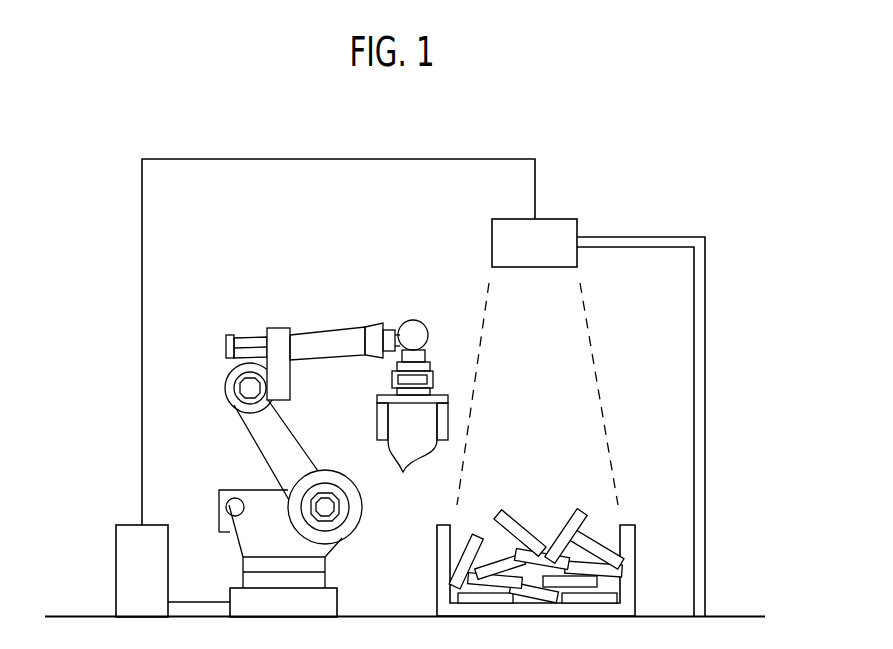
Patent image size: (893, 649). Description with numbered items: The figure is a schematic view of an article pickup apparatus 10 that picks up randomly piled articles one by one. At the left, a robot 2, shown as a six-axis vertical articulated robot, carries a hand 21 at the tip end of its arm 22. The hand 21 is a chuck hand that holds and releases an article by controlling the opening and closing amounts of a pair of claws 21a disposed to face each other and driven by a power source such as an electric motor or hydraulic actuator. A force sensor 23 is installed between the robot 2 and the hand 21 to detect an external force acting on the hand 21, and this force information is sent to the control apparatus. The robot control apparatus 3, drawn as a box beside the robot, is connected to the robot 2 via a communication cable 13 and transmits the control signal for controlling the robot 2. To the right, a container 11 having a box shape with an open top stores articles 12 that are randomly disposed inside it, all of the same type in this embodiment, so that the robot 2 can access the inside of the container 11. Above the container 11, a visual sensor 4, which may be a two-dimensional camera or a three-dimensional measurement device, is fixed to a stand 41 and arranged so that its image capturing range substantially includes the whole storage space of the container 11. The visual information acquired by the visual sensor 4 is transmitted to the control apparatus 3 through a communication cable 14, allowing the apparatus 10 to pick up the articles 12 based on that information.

The article pickup apparatus 10 is at (86, 298).
The communication cable 14 is at (326, 158).
The robot control apparatus 3 is at (116, 540).
The communication cable 13 is at (200, 602).
The visual sensor 4 is at (492, 238).
The stand 41 is at (705, 297).
The robot 2 is at (310, 316).
The arm 22 is at (350, 330).
The hand 21 is at (352, 416).
The force sensor 23 is at (430, 380).
The claws 21a is at (411, 454).
The container 11 is at (636, 540).
The articles 12 is at (514, 522).